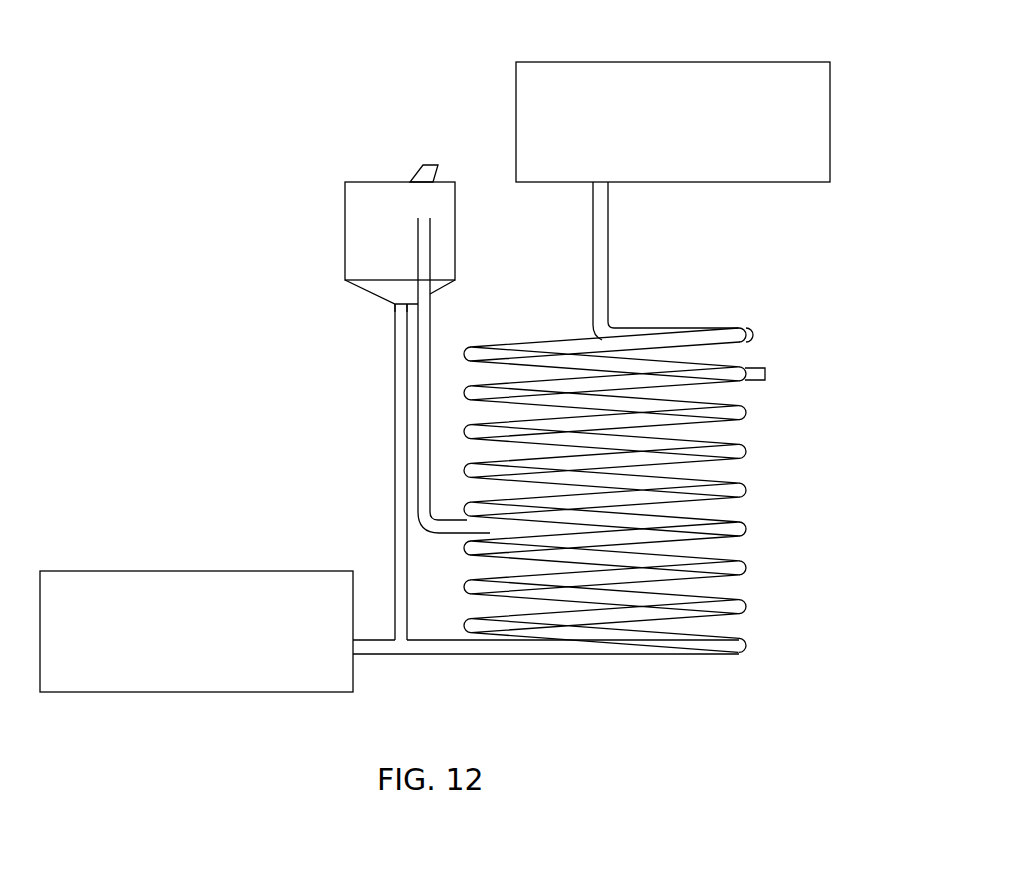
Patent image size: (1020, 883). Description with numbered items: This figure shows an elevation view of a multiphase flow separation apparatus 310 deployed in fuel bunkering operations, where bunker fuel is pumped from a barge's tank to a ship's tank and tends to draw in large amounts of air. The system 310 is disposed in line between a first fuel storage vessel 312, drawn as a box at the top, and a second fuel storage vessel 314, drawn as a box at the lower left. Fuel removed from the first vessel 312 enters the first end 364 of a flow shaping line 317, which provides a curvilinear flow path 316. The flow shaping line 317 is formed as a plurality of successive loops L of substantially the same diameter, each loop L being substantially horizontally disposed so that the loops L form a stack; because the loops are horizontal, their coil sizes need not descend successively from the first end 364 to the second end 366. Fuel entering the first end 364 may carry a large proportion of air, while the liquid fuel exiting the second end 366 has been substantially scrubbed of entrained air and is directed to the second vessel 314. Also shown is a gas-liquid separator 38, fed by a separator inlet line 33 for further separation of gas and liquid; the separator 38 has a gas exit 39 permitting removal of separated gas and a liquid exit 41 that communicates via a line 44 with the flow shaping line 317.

The first fuel storage vessel 312 is at (672, 62).
The first end of flow shaping line 364 is at (608, 303).
The gas-liquid separator 38 is at (345, 215).
The gas exit 39 is at (428, 163).
The liquid exit 41 is at (395, 306).
The line 44 is at (395, 358).
The separator inlet line 33 is at (432, 330).
The flow shaping line 317 is at (735, 434).
The curvilinear flow path 316 is at (748, 330).
The multiphase flow separation apparatus 310 is at (742, 291).
The loop L is at (746, 530).
The second fuel storage vessel 314 is at (162, 570).
The second end of flow shaping line 366 is at (465, 655).